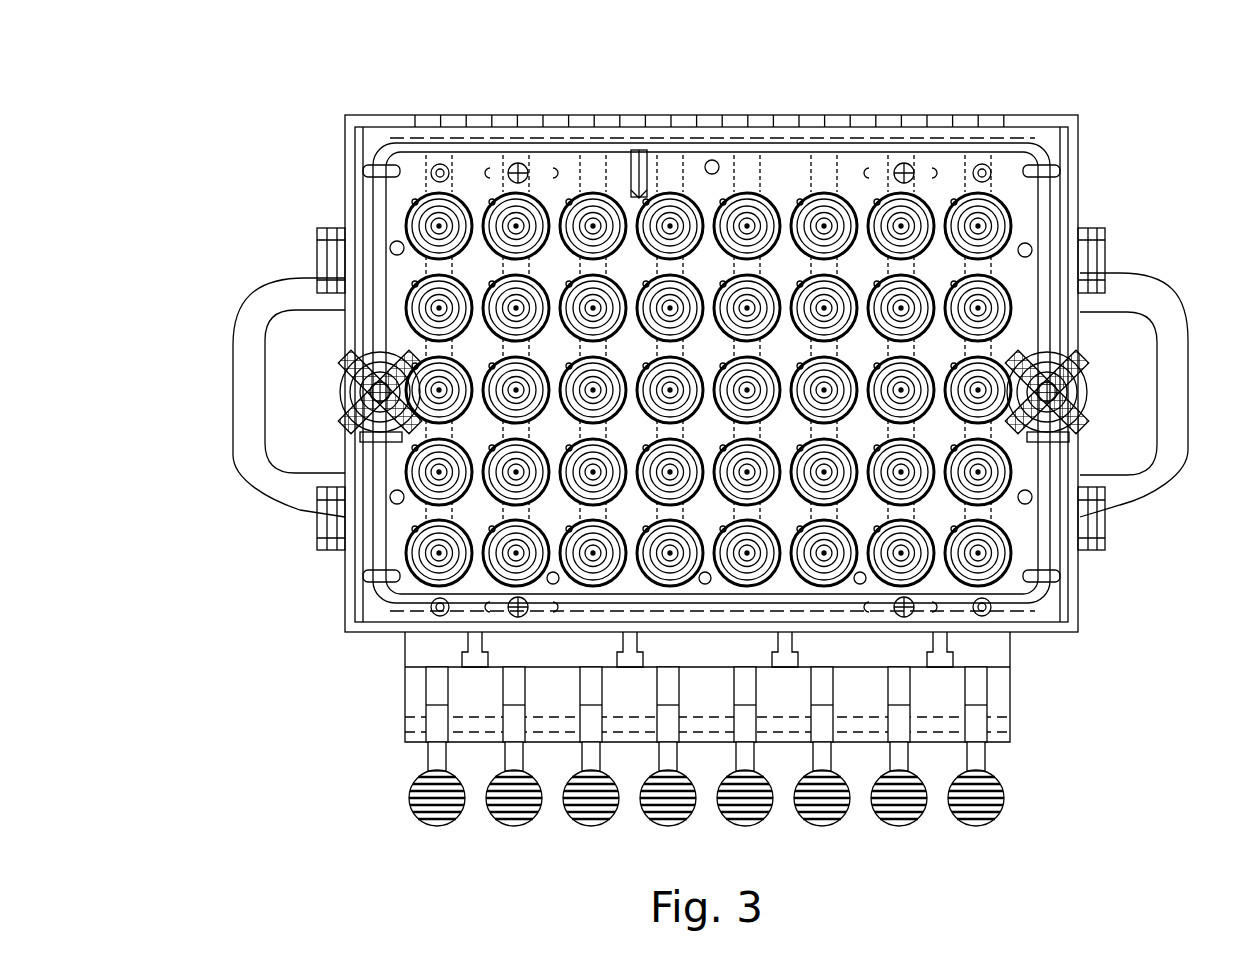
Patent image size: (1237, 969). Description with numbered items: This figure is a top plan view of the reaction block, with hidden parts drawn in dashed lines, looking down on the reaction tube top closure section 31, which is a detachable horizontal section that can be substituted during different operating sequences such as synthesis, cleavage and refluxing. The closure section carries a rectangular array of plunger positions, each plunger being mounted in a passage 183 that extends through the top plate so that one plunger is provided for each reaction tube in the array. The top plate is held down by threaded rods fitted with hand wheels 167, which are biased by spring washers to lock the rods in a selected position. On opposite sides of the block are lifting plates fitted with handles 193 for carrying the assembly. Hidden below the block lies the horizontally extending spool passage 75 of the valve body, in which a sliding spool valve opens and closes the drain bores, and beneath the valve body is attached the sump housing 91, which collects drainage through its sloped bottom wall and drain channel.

The reaction tube top closure section 31 is at (848, 100).
The spool passage 75 is at (446, 112).
The passage 183 is at (747, 222).
The hand wheels 167 is at (340, 428).
The handles 193 is at (282, 490).
The sump housing 91 is at (950, 695).